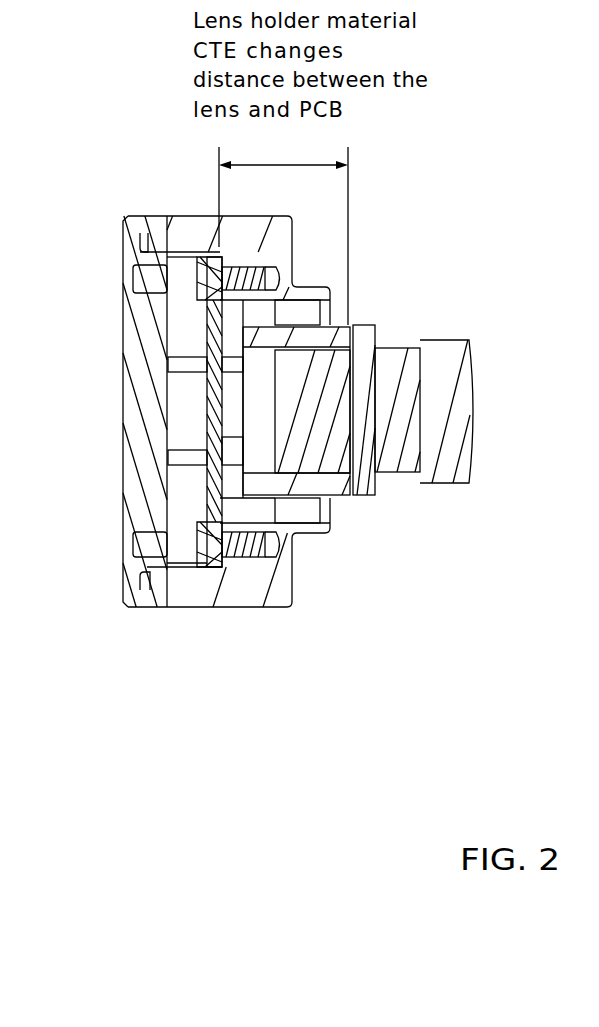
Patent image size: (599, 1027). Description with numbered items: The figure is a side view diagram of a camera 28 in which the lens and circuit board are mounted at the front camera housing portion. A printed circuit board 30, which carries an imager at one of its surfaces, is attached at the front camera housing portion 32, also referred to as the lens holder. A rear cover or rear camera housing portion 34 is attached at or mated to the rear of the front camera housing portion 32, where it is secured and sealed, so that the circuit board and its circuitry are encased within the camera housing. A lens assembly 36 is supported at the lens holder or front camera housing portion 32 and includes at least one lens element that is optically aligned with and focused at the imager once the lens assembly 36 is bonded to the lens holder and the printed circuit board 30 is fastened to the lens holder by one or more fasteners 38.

The camera 28 is at (484, 213).
The printed circuit board 30 is at (225, 445).
The front camera housing portion 32 is at (276, 603).
The rear camera housing portion 34 is at (128, 488).
The lens assembly 36 is at (416, 375).
The fastener 38 is at (212, 554).